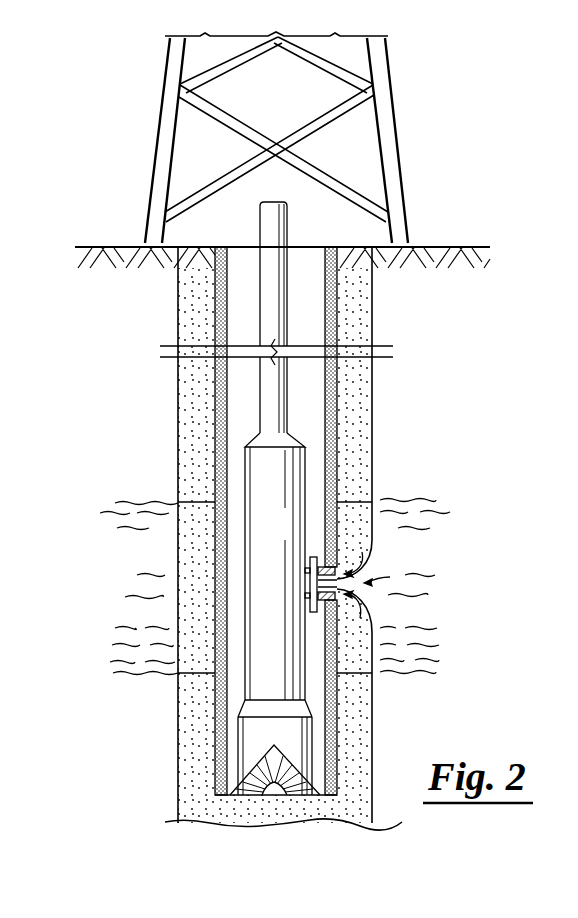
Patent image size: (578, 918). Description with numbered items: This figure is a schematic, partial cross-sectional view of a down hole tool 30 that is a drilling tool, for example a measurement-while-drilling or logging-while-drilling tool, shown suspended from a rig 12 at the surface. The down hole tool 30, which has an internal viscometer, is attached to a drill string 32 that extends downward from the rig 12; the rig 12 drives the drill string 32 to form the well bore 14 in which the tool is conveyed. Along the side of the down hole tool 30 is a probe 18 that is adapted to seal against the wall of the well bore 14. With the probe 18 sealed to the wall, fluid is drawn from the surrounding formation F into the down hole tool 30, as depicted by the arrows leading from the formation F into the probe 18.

The rig 12 is at (396, 137).
The well bore 14 is at (318, 262).
The probe 18 is at (322, 556).
The down hole tool 30 is at (306, 480).
The drill string 32 is at (258, 298).
The formation F is at (118, 652).